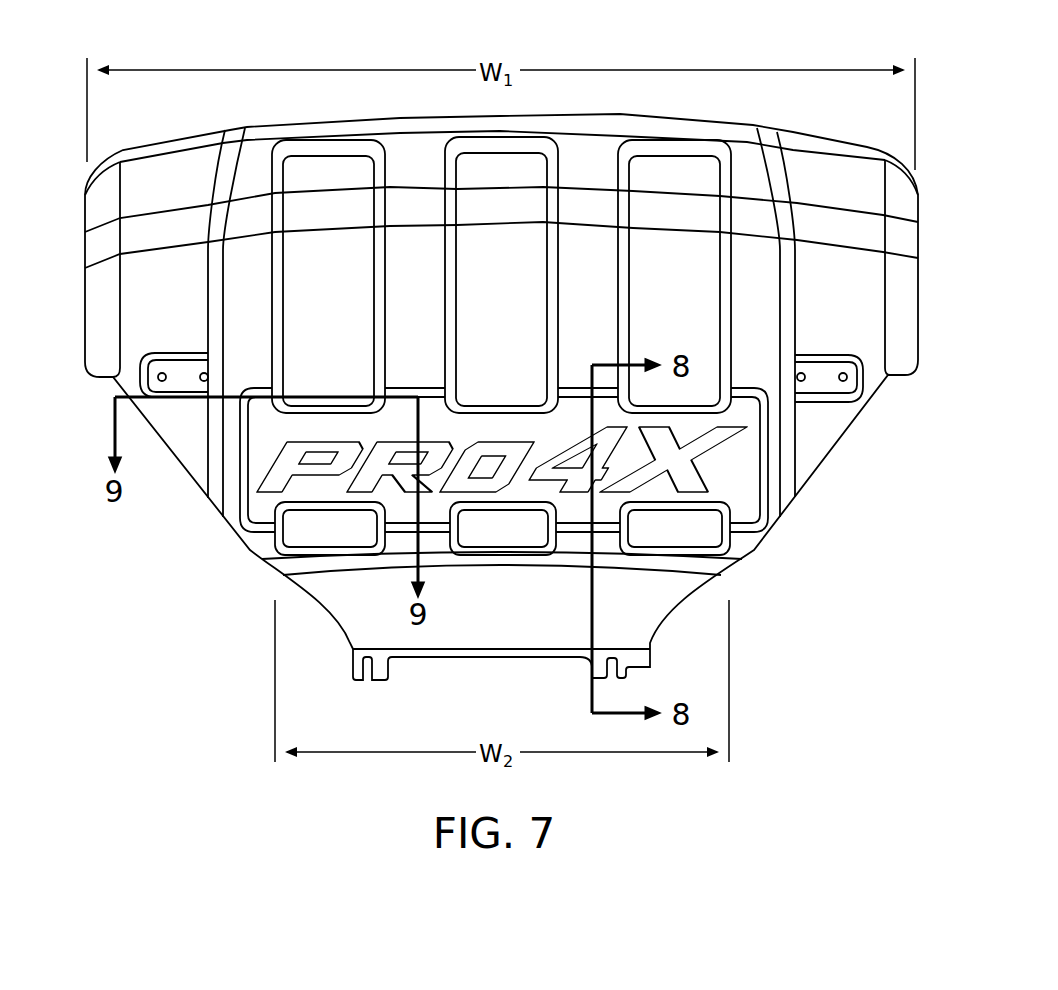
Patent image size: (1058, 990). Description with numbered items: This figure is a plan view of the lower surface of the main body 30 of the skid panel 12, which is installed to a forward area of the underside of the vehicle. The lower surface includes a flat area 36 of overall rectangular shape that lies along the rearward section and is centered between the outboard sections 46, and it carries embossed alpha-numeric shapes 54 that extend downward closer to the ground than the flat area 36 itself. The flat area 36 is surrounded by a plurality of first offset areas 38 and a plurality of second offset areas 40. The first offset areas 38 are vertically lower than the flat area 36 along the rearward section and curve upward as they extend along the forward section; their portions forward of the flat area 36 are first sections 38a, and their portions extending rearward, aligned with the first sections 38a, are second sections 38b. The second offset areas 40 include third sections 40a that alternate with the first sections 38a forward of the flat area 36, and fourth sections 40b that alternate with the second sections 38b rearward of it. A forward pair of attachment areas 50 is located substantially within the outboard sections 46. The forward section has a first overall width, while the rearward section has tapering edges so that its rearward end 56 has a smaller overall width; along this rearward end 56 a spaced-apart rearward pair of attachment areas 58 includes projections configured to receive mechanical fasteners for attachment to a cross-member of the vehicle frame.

The skid panel 12 is at (206, 20).
The main body 30 is at (696, 106).
The flat area 36 is at (263, 442).
The first offset areas 38 is at (663, 263).
The first sections 38a is at (490, 266).
The second sections 38b is at (340, 533).
The second offset areas 40 is at (247, 282).
The third sections 40a is at (404, 314).
The fourth sections 40b is at (257, 543).
The outboard sections 46 is at (160, 306).
The forward pair of attachment areas 50 is at (178, 373).
The alpha-numeric shapes 54 is at (720, 447).
The rearward end 56 is at (622, 623).
The rearward pair of attachment areas 58 is at (380, 683).